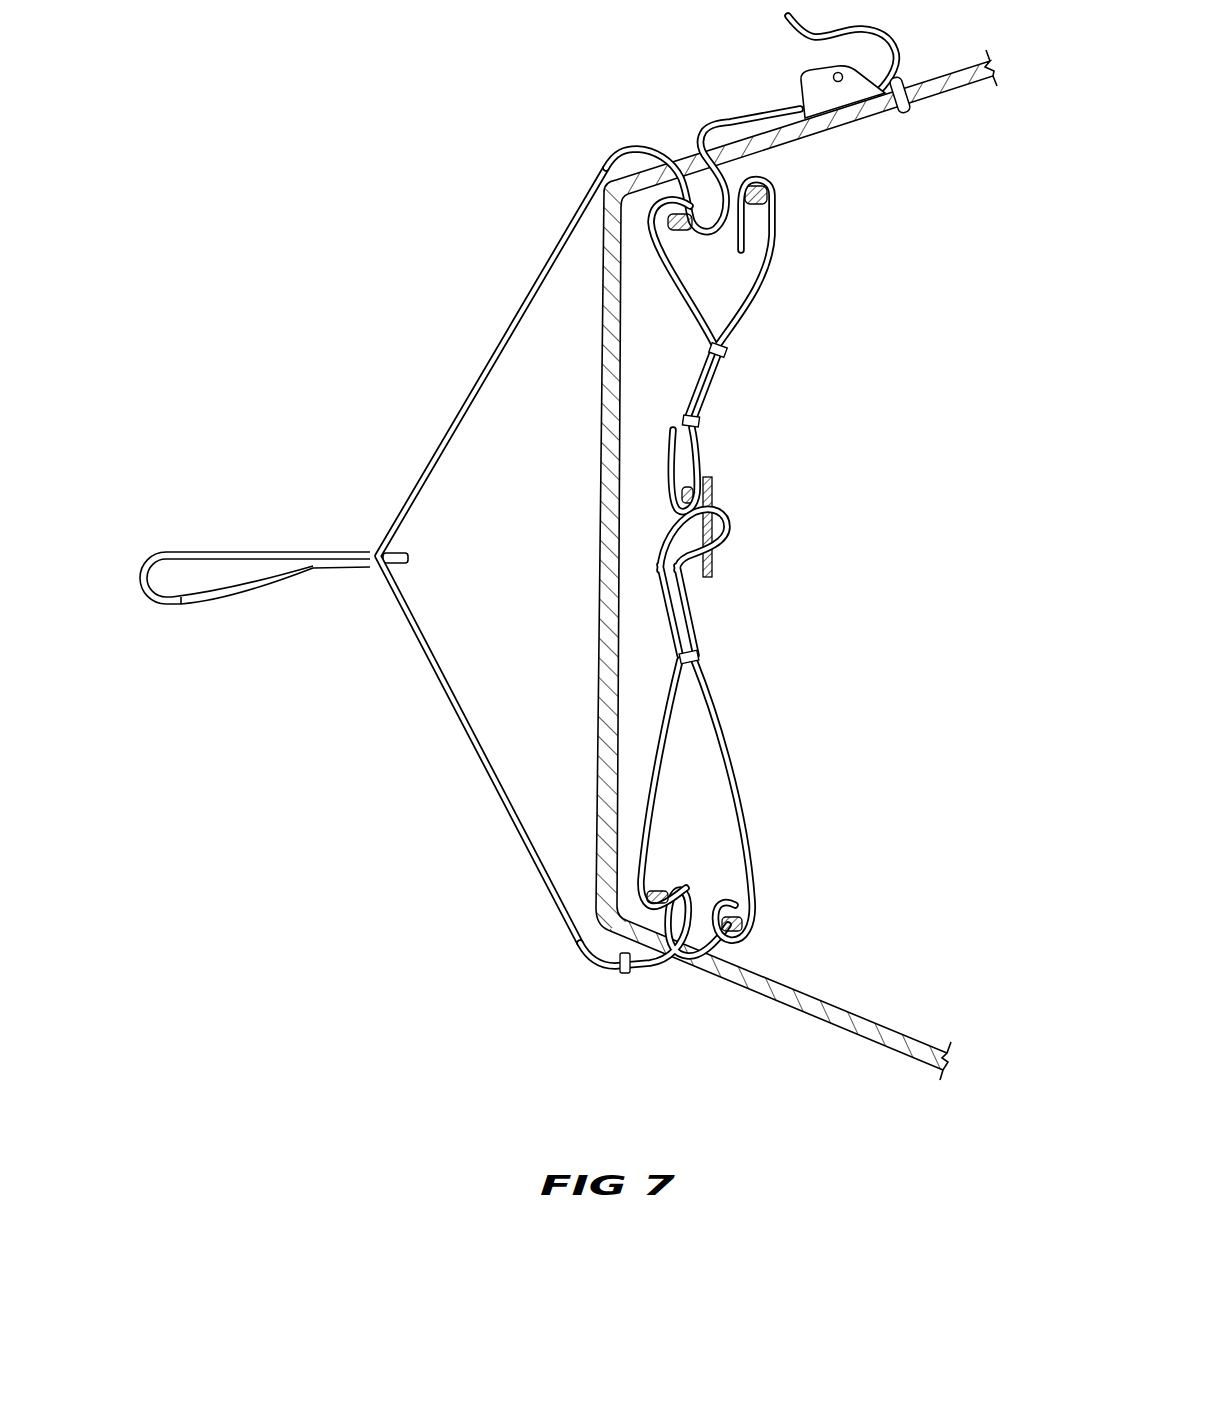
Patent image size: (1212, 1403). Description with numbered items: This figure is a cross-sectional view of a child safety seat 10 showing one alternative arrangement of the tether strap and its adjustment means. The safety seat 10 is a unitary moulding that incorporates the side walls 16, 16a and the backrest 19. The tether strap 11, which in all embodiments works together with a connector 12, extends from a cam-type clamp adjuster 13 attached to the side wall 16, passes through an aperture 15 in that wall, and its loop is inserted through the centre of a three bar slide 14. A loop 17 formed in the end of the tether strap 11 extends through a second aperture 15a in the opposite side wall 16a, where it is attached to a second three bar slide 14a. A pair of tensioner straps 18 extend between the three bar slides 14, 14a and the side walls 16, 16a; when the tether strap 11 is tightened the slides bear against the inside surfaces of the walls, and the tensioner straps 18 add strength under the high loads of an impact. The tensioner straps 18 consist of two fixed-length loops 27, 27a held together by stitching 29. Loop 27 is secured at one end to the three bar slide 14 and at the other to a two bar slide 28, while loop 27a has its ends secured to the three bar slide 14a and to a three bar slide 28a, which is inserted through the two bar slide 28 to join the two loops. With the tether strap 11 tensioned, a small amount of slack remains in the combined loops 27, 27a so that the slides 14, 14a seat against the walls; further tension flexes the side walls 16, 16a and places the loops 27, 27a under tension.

The safety seat 10 is at (470, 529).
The tether strap 11 is at (452, 708).
The connector 12 is at (223, 550).
The cam-type clamp adjuster 13 is at (797, 70).
The three bar slide 14 is at (752, 205).
The second three bar slide 14a is at (747, 917).
The aperture 15 is at (680, 130).
The second aperture 15a is at (697, 982).
The side wall 16 is at (863, 125).
The side wall 16a is at (847, 997).
The loop 17 is at (675, 953).
The tensioner straps 18 is at (790, 448).
The backrest 19 is at (580, 611).
The loop 27 is at (742, 323).
The loop 27a is at (735, 772).
The two bar slide 28 is at (680, 497).
The three bar slide 28a is at (713, 563).
The stitching 29 is at (723, 352).